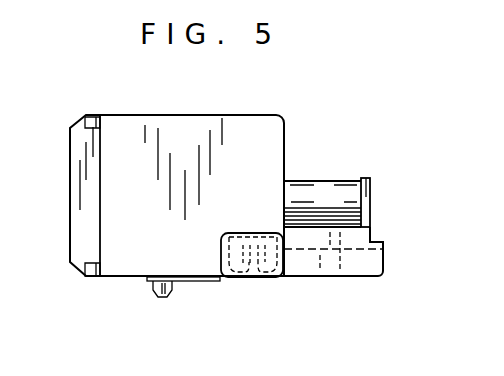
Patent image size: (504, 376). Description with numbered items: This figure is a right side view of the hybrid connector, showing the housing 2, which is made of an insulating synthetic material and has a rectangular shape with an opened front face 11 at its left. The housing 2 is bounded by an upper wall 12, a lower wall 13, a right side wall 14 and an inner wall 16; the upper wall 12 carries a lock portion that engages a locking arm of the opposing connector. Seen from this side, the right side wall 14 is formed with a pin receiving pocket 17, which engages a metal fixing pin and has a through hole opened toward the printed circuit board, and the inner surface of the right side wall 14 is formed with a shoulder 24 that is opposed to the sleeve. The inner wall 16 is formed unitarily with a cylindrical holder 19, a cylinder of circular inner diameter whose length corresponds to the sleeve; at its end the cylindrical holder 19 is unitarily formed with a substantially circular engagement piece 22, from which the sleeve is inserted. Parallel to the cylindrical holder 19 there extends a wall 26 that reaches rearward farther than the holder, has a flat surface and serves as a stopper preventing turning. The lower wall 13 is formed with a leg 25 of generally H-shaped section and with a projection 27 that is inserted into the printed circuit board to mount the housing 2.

The housing 2 is at (232, 113).
The opened front face 11 is at (90, 238).
The upper wall 12 is at (142, 113).
The lower wall 13 is at (125, 277).
The right side wall 14 is at (255, 143).
The inner wall 16 is at (286, 160).
The pin receiving pocket 17 is at (265, 240).
The cylindrical holder 19 is at (342, 190).
The engagement piece 22 is at (372, 194).
The shoulder 24 is at (326, 228).
The leg 25 is at (378, 262).
The wall 26 is at (380, 243).
The projection 27 is at (172, 295).